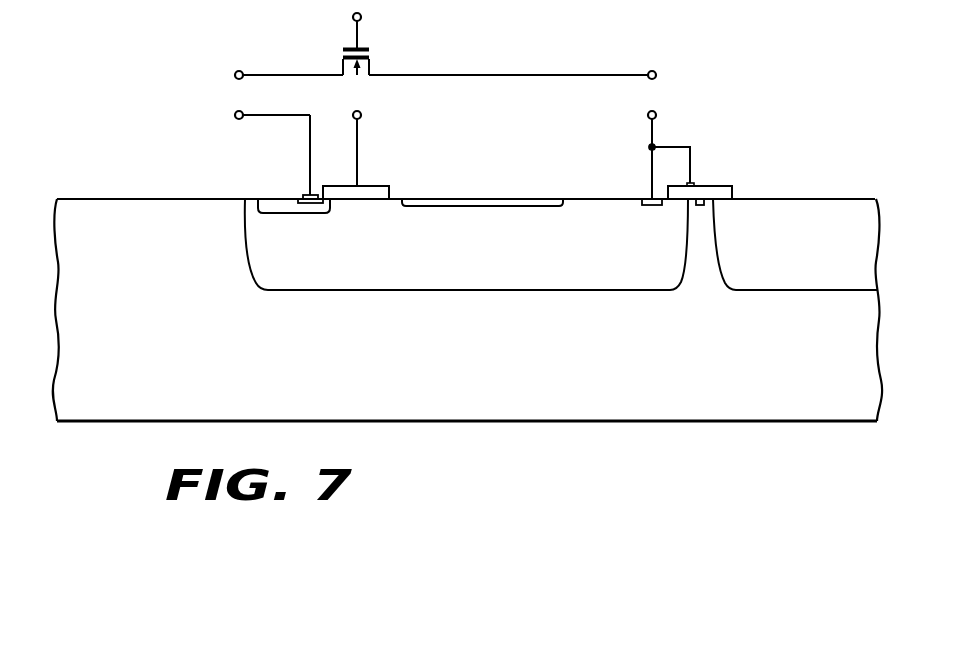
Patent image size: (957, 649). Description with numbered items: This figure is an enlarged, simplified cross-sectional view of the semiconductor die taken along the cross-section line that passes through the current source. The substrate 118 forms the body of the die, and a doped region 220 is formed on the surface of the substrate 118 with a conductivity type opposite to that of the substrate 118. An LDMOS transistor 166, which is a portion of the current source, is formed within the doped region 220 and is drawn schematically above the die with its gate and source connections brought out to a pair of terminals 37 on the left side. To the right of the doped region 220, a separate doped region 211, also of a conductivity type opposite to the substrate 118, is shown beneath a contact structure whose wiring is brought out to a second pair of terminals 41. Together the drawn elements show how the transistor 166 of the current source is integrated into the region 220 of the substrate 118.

The substrate 118 is at (487, 393).
The doped region 220 is at (467, 282).
The region 211 is at (797, 281).
The first terminal pair 37 is at (235, 83).
The second terminal pair 41 is at (657, 82).
The LDMOS transistor 166 is at (376, 54).